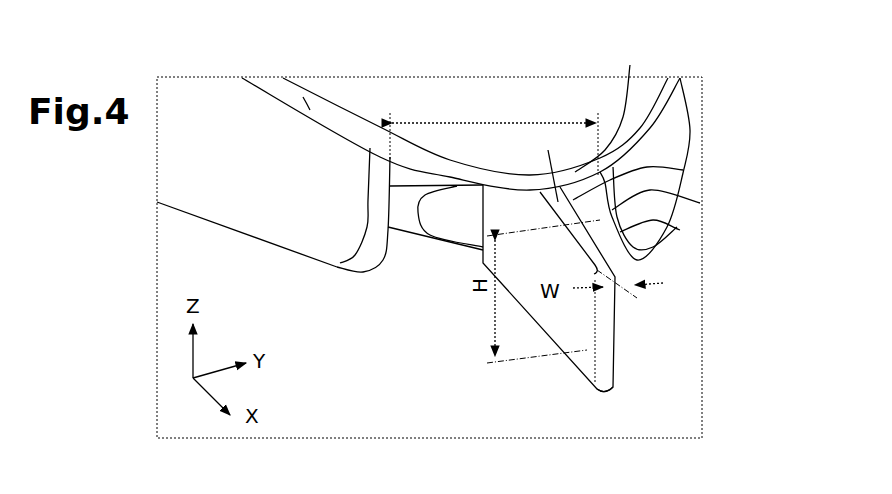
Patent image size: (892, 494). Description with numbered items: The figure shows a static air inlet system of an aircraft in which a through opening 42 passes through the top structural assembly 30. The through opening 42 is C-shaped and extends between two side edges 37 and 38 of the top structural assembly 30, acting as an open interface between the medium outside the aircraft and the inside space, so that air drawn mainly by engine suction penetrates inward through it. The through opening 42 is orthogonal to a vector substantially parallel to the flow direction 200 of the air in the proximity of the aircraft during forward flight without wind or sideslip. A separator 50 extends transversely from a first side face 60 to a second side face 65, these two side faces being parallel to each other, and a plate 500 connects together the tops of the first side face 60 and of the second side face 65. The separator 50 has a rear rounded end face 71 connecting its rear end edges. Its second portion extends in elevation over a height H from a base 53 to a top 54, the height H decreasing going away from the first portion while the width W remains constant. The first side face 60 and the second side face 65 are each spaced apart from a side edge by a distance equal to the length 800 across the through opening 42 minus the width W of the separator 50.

The top structural assembly 30 is at (153, 177).
The side edge 37 is at (373, 220).
The side edge 38 is at (700, 203).
The through opening 42 is at (435, 282).
The separator 50 is at (655, 363).
The base 53 is at (577, 380).
The top 54 is at (555, 197).
The first side face 60 is at (563, 327).
The second side face 65 is at (683, 170).
The rear rounded end face 71 is at (603, 335).
The flow direction 200 is at (510, 110).
The plate 500 is at (614, 103).
The length 800 is at (557, 115).